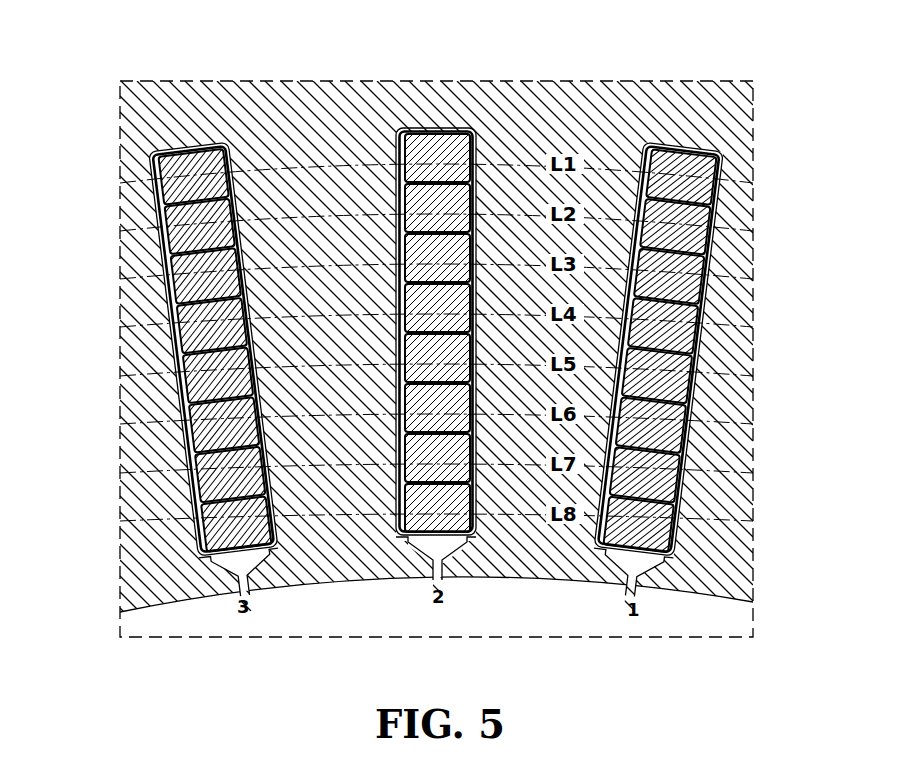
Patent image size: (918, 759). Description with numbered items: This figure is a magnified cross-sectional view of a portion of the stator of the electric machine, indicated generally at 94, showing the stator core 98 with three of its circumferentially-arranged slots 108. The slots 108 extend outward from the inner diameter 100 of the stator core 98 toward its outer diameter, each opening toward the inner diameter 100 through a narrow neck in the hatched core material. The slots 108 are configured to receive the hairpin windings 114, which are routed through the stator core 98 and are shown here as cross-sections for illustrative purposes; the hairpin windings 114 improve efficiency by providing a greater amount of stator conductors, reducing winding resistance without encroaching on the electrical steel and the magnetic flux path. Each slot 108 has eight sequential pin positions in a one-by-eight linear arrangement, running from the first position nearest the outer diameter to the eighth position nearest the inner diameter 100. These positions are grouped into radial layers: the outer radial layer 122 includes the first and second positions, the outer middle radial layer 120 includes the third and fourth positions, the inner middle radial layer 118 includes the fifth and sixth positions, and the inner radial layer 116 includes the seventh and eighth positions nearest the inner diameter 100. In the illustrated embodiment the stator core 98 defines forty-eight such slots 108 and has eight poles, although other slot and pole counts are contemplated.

The stator assembly 94 is at (676, 47).
The stator core 98 is at (483, 93).
The inner diameter 100 is at (488, 578).
The slots 108 is at (226, 612).
The hairpin windings 114 is at (722, 63).
The inner radial layer 116 is at (97, 452).
The inner middle radial layer 118 is at (60, 352).
The outer middle radial layer 120 is at (97, 252).
The outer radial layer 122 is at (60, 152).